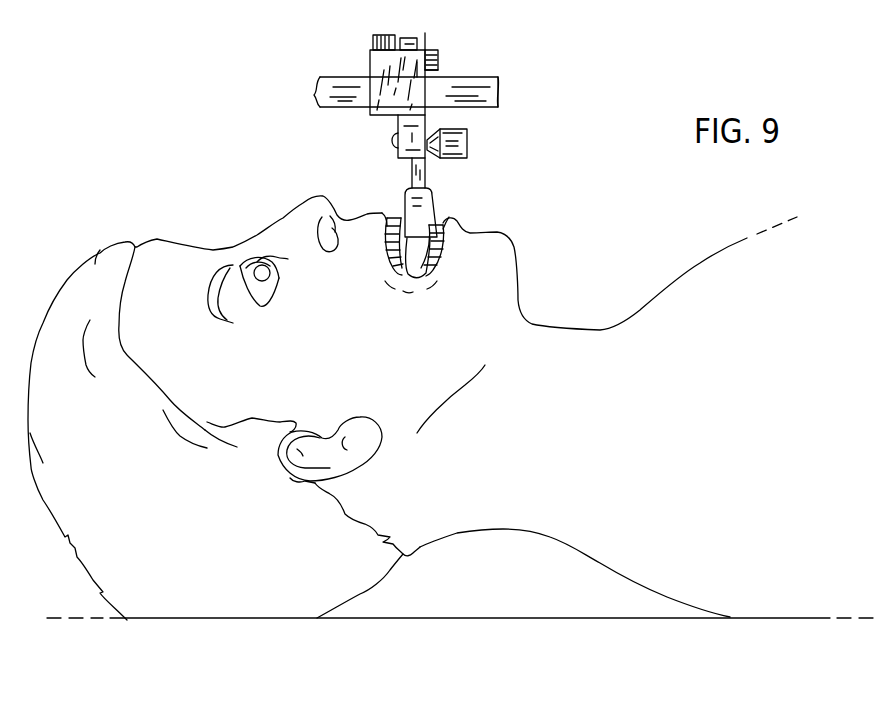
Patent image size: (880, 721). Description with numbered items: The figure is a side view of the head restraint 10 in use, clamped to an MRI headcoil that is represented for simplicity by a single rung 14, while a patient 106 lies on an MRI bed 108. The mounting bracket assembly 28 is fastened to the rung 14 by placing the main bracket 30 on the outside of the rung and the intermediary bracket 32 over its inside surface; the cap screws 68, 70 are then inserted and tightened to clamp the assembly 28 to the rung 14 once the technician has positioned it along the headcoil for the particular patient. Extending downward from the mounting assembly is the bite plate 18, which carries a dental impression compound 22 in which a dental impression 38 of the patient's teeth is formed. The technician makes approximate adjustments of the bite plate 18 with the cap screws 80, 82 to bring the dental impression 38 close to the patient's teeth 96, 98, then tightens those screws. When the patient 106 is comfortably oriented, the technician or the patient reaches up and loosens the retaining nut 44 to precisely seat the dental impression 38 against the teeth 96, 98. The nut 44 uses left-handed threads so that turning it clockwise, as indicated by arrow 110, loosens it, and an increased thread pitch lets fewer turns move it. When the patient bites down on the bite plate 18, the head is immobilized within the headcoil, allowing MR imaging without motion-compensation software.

The head restraint 10 is at (417, 152).
The rung 14 is at (488, 88).
The bite plate 18 is at (412, 182).
The dental impression compound 22 is at (430, 193).
The mounting bracket assembly 28 is at (407, 100).
The main bracket 30 is at (419, 73).
The intermediary bracket 32 is at (400, 123).
The dental impression 38 is at (430, 215).
The retaining nut 44 is at (457, 160).
The cap screw 68 is at (397, 33).
The cap screw 70 is at (400, 38).
The cap screw 80 is at (427, 50).
The cap screw 82 is at (438, 70).
The patient's teeth 96 is at (393, 213).
The patient's teeth 98 is at (455, 227).
The patient 106 is at (582, 447).
The MRI bed 108 is at (525, 620).
The arrow 110 is at (467, 118).